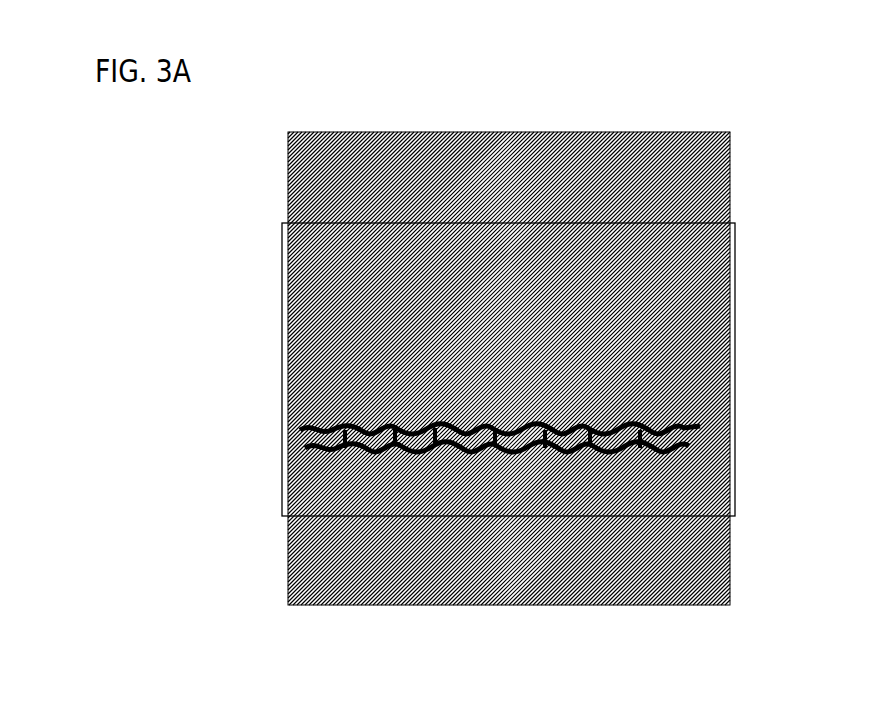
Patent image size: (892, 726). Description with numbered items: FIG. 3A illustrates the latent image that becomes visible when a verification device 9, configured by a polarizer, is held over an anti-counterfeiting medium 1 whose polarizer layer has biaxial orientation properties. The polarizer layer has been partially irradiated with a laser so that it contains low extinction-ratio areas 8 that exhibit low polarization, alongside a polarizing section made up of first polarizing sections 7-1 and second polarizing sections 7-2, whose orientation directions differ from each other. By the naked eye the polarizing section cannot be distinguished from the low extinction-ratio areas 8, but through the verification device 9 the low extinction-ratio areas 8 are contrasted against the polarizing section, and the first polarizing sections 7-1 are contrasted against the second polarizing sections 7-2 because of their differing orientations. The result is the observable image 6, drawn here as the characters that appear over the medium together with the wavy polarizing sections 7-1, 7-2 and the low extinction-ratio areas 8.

The thermal transfer image receiving medium 1 is at (283, 516).
The printed character image 6 is at (318, 340).
The first polarizing sections 7-1 is at (393, 452).
The second polarizing sections 7-2 is at (418, 455).
The low extinction-ratio areas 8 is at (587, 455).
The verification device 9 is at (620, 575).